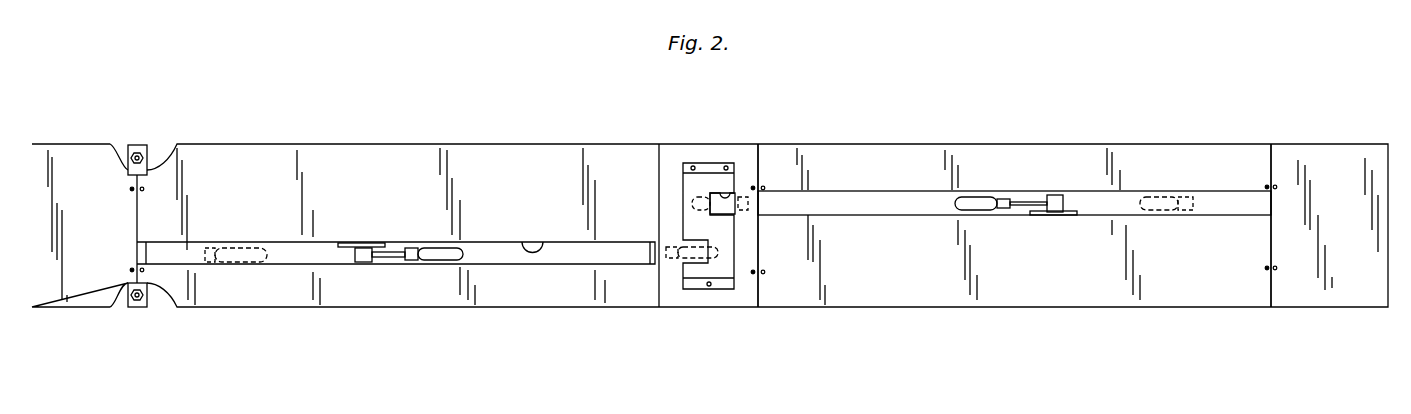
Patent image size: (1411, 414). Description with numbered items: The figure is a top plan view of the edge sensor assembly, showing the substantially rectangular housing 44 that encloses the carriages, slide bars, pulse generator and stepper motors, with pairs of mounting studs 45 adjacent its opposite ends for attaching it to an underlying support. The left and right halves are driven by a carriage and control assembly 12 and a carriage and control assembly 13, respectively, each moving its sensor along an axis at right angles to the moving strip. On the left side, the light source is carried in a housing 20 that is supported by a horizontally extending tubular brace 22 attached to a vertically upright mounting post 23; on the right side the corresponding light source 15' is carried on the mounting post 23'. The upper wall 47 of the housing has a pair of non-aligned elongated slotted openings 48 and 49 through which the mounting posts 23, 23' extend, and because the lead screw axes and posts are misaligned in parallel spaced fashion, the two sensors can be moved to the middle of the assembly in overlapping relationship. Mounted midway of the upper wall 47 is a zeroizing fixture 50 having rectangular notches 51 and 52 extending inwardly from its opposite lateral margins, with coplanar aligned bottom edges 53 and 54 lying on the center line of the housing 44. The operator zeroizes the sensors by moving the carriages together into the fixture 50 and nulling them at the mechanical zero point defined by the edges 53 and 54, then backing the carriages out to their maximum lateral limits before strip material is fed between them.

The carriage and control assembly 12 is at (392, 130).
The carriage and control assembly 13 is at (1052, 130).
The light source 15' is at (982, 151).
The housing 20 is at (442, 258).
The tubular brace 22 is at (390, 260).
The mounting post 23 is at (351, 299).
The mounting post 23' is at (1074, 154).
The housing 44 is at (907, 312).
The mounting studs 45 is at (138, 151).
The upper wall 47 is at (530, 192).
The slotted opening 48 is at (545, 242).
The slotted opening 49 is at (873, 190).
The zeroizing fixture 50 is at (719, 154).
The notch 51 is at (735, 195).
The notch 52 is at (695, 263).
The bottom edge 53 is at (725, 197).
The bottom edge 54 is at (718, 250).